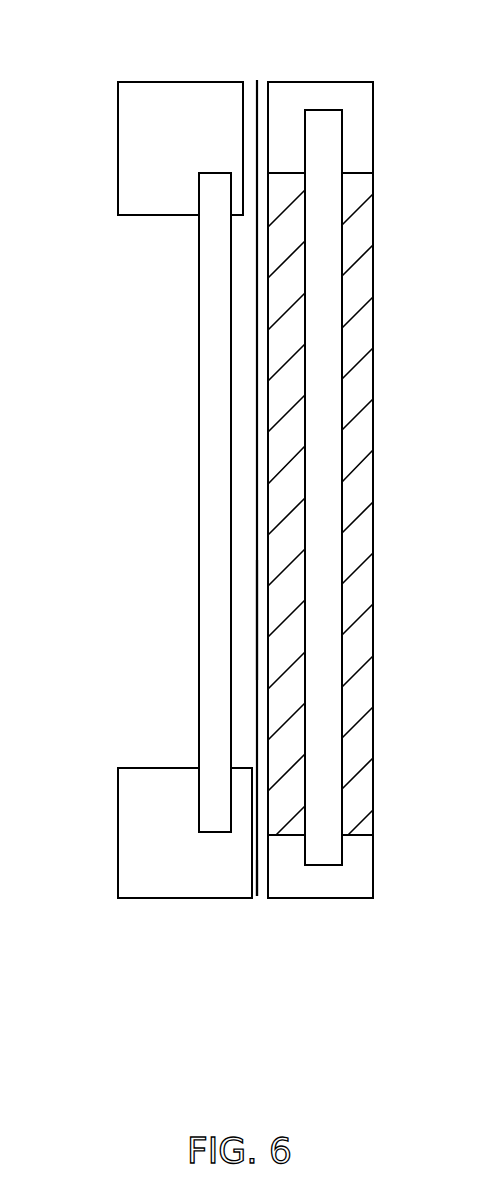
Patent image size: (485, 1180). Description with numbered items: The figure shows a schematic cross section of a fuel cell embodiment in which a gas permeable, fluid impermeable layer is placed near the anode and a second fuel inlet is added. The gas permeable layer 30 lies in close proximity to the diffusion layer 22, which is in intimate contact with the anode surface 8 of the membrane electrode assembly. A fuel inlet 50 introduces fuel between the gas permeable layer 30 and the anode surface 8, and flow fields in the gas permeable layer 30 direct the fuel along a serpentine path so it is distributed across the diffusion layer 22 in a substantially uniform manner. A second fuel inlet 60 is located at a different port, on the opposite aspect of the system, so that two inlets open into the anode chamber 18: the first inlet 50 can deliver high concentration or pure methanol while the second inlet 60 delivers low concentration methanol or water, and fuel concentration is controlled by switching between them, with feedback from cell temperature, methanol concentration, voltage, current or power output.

The anode surface 8 is at (268, 822).
The anode chamber 18 is at (293, 930).
The diffusion layer 22 is at (257, 620).
The gas permeable layer 30 is at (199, 482).
The fuel inlet 50 is at (254, 66).
The second fuel inlet 60 is at (259, 906).